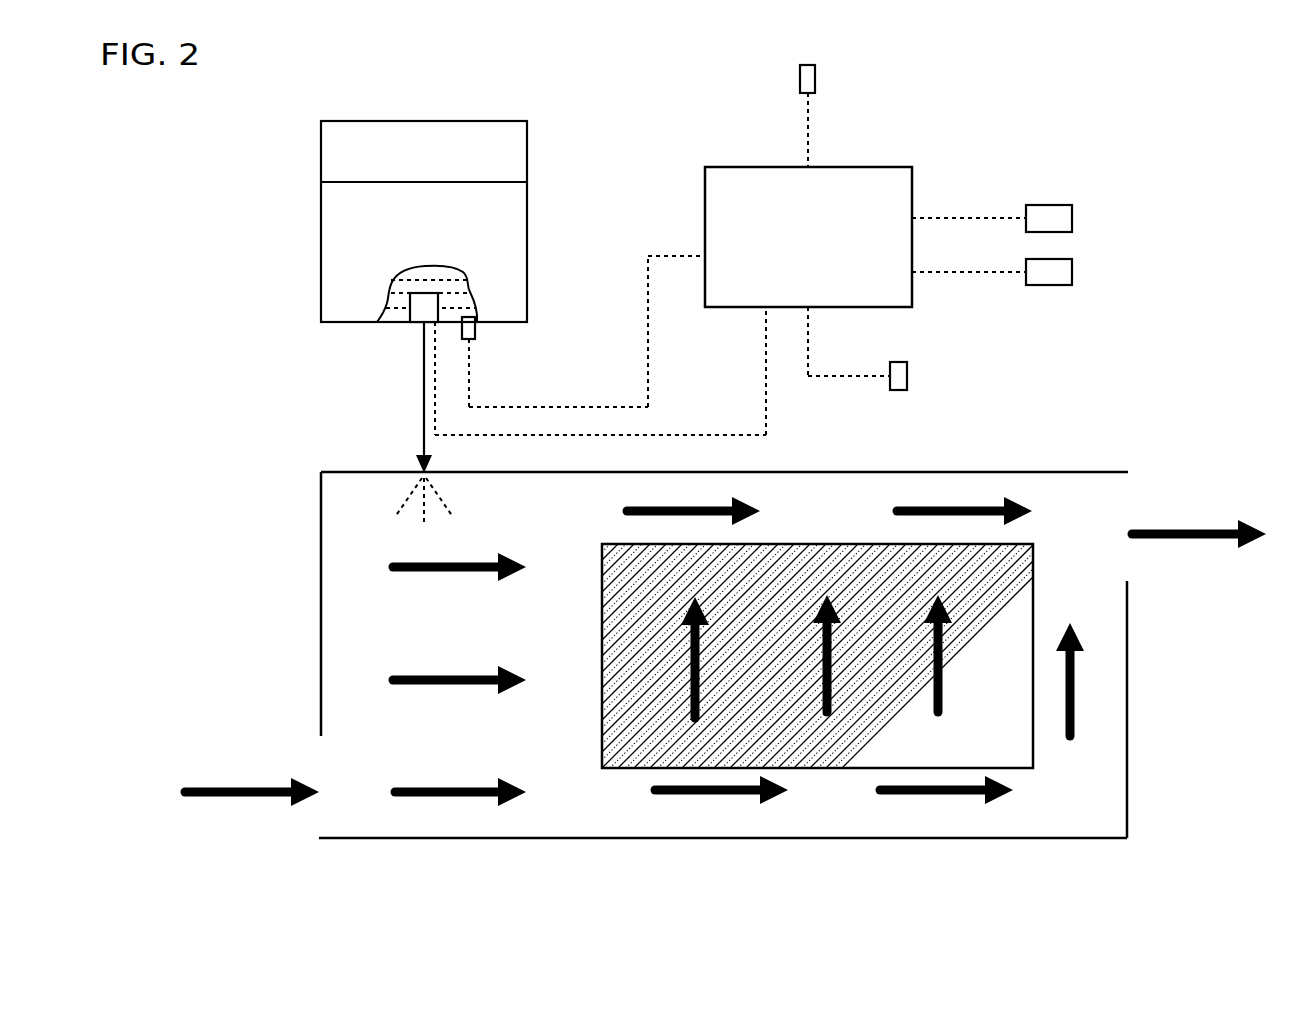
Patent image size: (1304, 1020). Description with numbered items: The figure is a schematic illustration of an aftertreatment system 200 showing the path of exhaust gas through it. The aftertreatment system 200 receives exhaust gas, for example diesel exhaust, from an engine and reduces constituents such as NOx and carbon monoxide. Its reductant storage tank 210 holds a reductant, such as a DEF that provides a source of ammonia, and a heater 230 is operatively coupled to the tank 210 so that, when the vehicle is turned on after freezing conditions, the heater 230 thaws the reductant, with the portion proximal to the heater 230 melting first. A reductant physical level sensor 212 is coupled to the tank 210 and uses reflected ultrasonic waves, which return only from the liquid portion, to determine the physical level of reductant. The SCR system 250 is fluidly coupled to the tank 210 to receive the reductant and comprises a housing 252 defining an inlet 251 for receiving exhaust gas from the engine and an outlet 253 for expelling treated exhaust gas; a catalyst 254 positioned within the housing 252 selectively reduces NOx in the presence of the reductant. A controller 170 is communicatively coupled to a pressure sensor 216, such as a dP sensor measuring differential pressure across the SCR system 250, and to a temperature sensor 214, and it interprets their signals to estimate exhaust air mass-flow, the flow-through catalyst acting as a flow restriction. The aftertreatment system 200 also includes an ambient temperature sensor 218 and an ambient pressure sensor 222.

The aftertreatment system 200 is at (1128, 130).
The controller 170 is at (898, 167).
The reductant storage tank 210 is at (527, 170).
The reductant physical level sensor 212 is at (470, 318).
The temperature sensor 214 is at (905, 378).
The pressure sensor 216 is at (800, 80).
The ambient temperature sensor 218 is at (1066, 218).
The ambient pressure sensor 222 is at (1066, 272).
The heater 230 is at (414, 308).
The SCR system 250 is at (725, 651).
The inlet 251 is at (321, 820).
The housing 252 is at (321, 493).
The outlet 253 is at (1117, 565).
The catalyst 254 is at (826, 756).